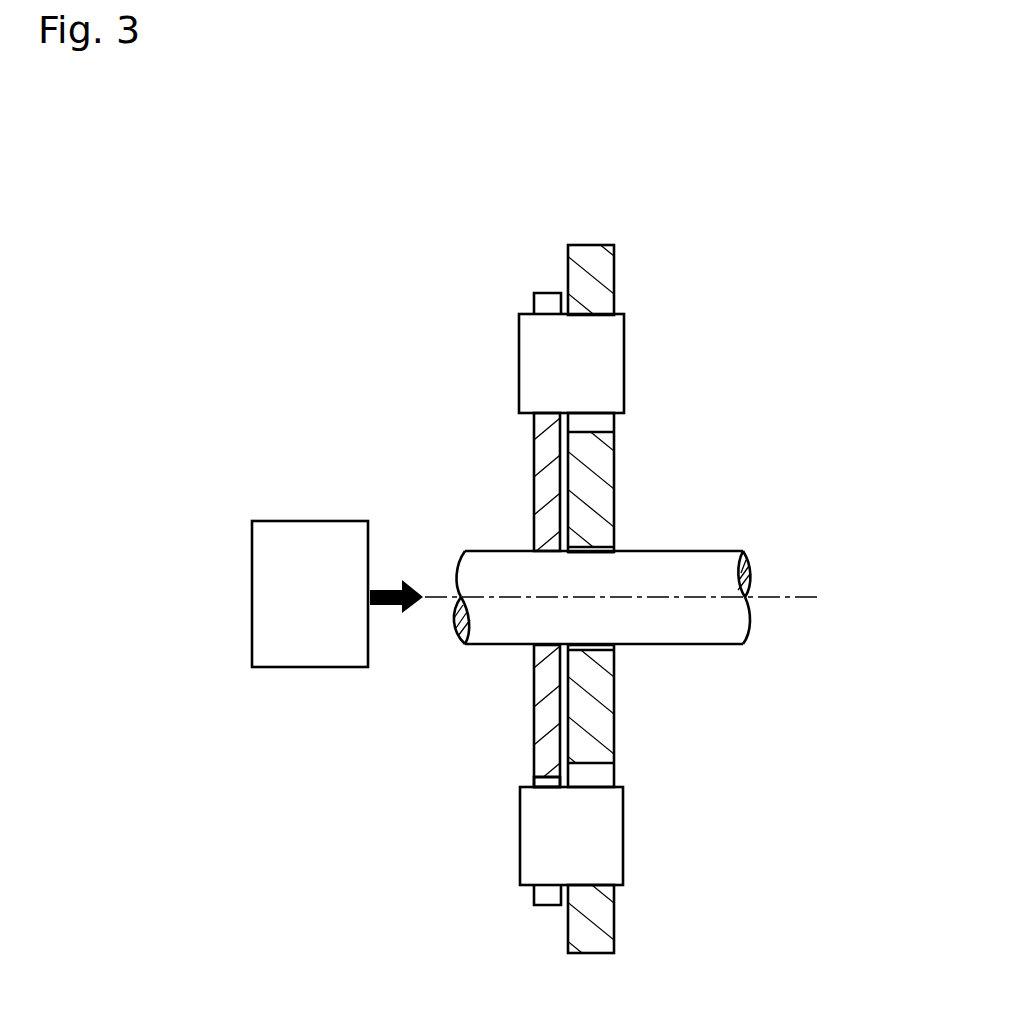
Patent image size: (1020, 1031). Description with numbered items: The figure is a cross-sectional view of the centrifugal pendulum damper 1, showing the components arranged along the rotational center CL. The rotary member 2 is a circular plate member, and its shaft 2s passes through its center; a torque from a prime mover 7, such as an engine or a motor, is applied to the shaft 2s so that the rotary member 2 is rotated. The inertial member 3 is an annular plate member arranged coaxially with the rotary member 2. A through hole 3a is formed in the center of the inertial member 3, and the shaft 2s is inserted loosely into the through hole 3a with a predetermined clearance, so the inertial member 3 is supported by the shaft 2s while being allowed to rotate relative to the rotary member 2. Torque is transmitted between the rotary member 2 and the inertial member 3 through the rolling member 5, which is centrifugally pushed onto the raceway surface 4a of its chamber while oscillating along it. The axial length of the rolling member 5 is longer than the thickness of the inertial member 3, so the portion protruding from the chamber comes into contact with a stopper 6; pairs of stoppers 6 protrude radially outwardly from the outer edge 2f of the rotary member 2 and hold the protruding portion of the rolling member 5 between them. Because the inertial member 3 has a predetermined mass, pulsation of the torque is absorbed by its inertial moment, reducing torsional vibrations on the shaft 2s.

The centrifugal pendulum damper 1 is at (707, 184).
The rotary member 2 is at (544, 487).
The shaft 2s is at (687, 628).
The outer edge 2f is at (553, 778).
The inertial member 3 is at (594, 258).
The through hole 3a is at (603, 561).
The raceway surface 4a is at (600, 315).
The rolling member 5 is at (612, 840).
The stopper 6 is at (545, 907).
The prime mover 7 is at (314, 604).
The rotational center CL is at (793, 597).